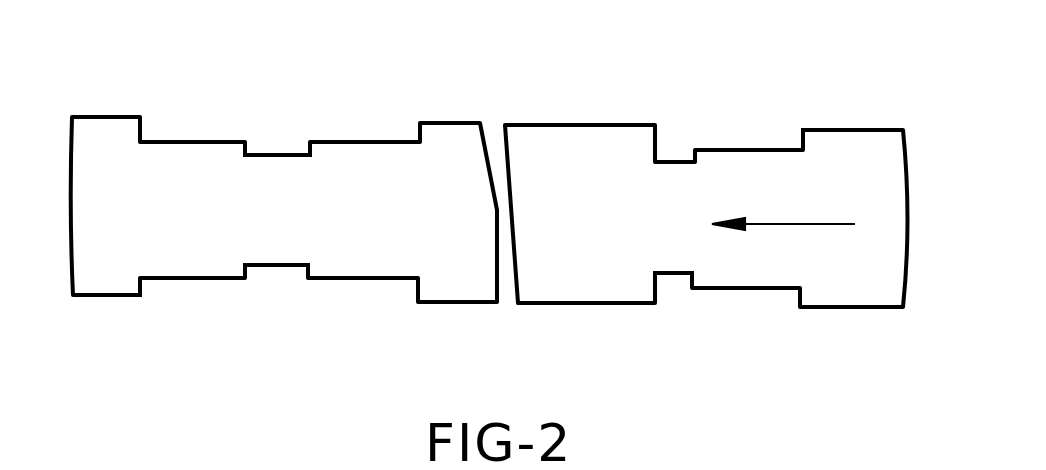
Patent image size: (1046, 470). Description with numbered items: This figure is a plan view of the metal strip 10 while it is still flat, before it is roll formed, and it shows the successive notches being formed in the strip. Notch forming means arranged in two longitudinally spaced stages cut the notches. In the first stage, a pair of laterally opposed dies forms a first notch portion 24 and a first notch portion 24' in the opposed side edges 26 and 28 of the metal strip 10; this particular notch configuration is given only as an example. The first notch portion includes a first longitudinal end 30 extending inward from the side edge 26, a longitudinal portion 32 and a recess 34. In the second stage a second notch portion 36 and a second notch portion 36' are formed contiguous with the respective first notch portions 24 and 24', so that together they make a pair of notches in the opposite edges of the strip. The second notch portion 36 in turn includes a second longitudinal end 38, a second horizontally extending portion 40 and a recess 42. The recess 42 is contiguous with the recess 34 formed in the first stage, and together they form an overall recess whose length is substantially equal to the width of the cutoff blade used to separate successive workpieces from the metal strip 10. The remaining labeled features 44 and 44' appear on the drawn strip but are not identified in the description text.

The metal strip 10 is at (552, 138).
The first notch portion 24 is at (554, 338).
The first notch portion 24' is at (556, 99).
The side edge 26 is at (852, 310).
The side edge 28 is at (844, 128).
The first longitudinal end 30 is at (793, 304).
The longitudinal portion 32 is at (718, 290).
The recess 34 is at (677, 276).
The second notch portion 36 is at (192, 345).
The second notch portion 36' is at (192, 95).
The second longitudinal end 38 is at (142, 284).
The second horizontally extending portion 40 is at (227, 283).
The recess 42 is at (267, 282).
The rib wall 44 is at (317, 337).
The groove 44' is at (280, 101).